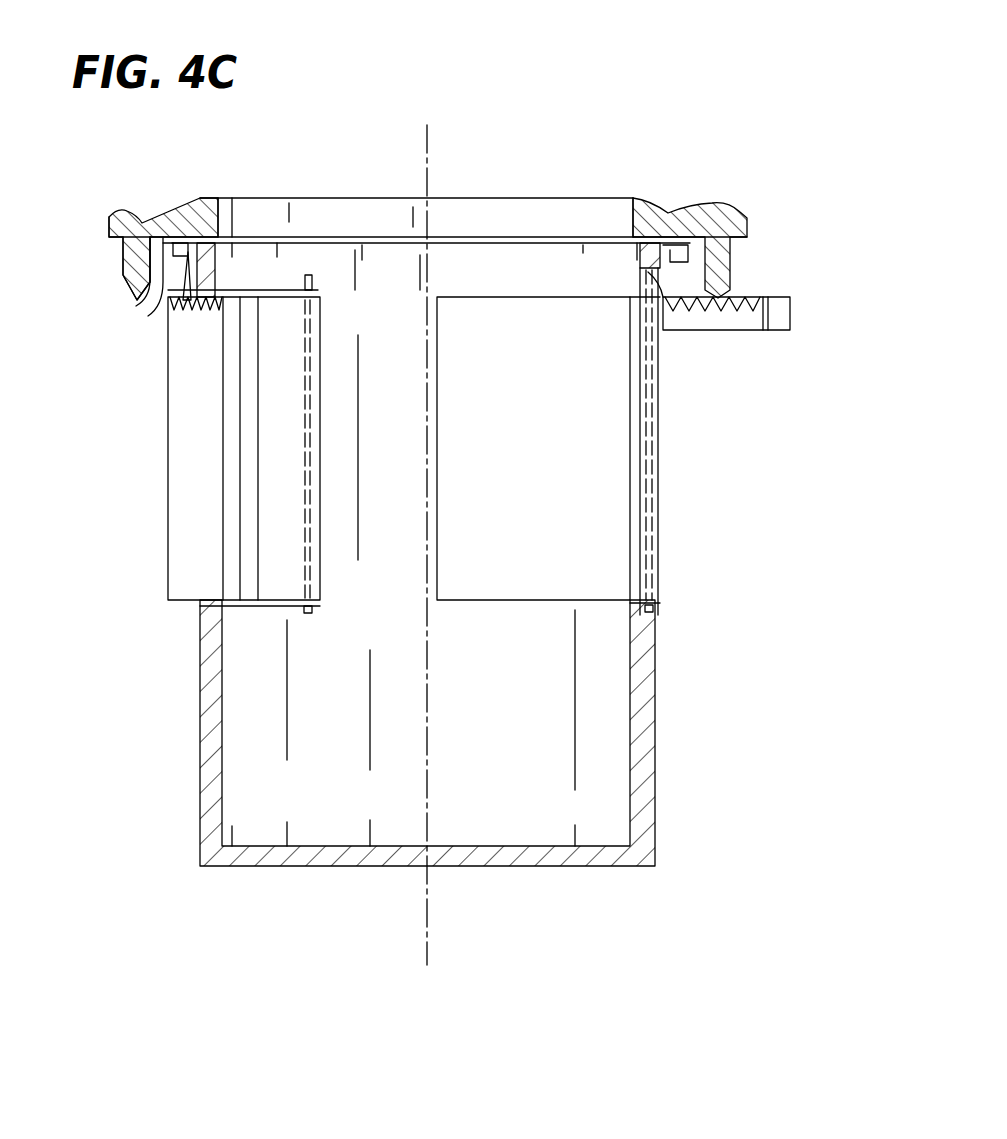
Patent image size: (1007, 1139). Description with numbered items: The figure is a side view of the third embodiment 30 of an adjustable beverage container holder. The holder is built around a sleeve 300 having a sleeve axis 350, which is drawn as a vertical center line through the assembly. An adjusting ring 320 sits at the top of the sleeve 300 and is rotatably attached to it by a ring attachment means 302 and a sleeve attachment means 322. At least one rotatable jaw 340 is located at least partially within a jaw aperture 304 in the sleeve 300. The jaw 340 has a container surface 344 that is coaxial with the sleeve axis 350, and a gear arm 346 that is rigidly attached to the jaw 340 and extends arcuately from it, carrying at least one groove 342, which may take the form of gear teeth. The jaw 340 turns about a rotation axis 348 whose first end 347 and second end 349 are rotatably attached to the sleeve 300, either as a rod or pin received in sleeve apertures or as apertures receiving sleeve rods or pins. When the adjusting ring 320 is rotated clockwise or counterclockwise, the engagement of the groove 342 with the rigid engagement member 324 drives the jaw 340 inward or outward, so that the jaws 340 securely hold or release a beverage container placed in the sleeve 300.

The third embodiment 30 is at (601, 97).
The sleeve 300 is at (655, 800).
The ring attachment means 302 is at (170, 318).
The jaw aperture 304 is at (200, 603).
The adjusting ring 320 is at (722, 212).
The sleeve attachment means 322 is at (147, 296).
The rigid engagement member 324 is at (135, 270).
The rotatable jaw 340 is at (612, 530).
The groove 342 is at (735, 296).
The container surface 344 is at (548, 472).
The gear arm 346 is at (780, 312).
The first end 347 is at (672, 333).
The rotation axis 348 is at (652, 456).
The second end 349 is at (650, 612).
The sleeve axis 350 is at (427, 157).